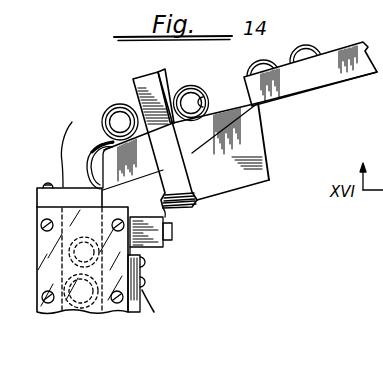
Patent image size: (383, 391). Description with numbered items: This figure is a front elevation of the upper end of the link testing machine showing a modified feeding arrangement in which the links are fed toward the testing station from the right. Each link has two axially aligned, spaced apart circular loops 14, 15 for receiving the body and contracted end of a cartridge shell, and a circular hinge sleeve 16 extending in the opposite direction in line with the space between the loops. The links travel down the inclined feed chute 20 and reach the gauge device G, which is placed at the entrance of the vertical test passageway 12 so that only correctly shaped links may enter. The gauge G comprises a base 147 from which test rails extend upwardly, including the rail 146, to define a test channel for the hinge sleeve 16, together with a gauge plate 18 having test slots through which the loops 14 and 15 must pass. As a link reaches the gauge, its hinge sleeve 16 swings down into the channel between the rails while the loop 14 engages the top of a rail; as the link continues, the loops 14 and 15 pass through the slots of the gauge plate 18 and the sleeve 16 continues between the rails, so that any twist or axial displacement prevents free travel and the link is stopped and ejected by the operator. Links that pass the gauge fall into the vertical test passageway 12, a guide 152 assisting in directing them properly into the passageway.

The vertical test passageway 12 is at (76, 197).
The circular loop 14 is at (194, 95).
The circular loop 15 is at (205, 96).
The hinge sleeve 16 is at (97, 131).
The gauge plate 18 is at (162, 79).
The feed chute 20 is at (315, 78).
The rail 146 is at (240, 140).
The base 147 is at (218, 187).
The guide 152 is at (57, 141).
The gauge device G is at (145, 85).